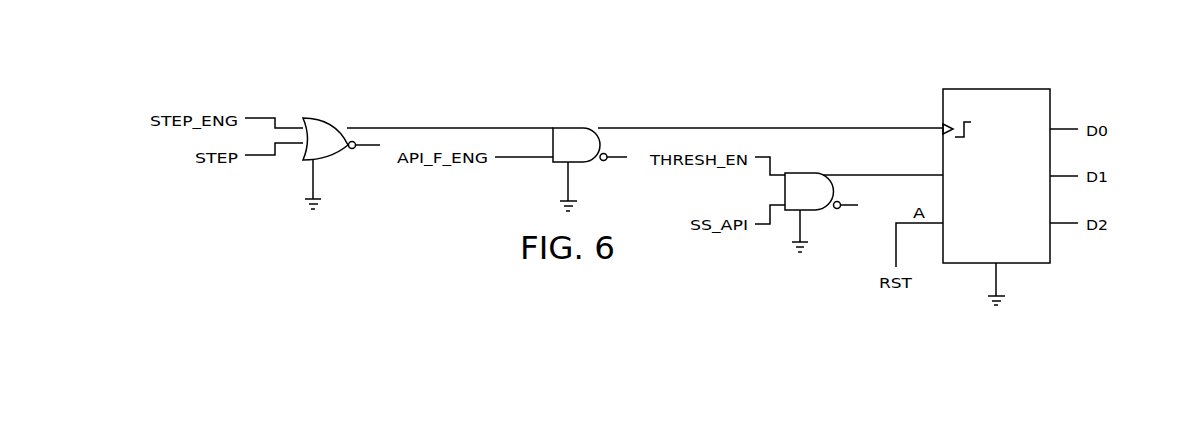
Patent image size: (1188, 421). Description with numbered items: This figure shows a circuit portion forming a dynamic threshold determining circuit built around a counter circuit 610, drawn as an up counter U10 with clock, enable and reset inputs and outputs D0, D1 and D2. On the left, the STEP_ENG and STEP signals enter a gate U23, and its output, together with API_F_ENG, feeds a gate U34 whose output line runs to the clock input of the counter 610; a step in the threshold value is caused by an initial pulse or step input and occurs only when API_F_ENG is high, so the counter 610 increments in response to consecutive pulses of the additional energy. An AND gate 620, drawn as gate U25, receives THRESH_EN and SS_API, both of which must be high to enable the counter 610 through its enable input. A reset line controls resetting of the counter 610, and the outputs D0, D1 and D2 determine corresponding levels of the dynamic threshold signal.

The counter circuit 610 is at (1005, 171).
The AND gate 620 is at (820, 225).
The NOR gate U23 is at (341, 155).
The NAND gate U34 is at (590, 157).
The NAND gate U25 is at (820, 202).
The up counter U10 is at (996, 187).